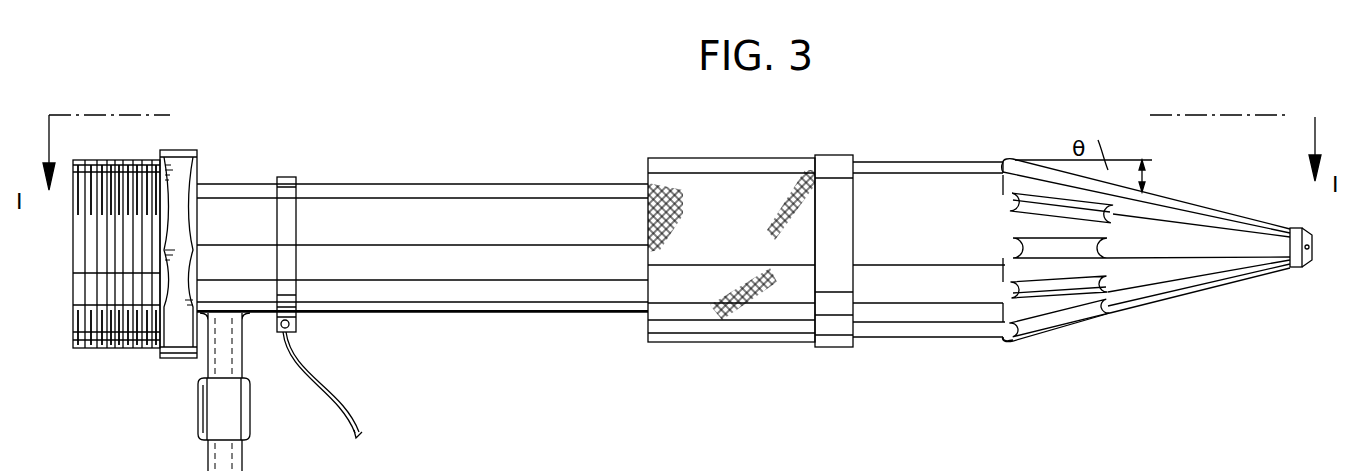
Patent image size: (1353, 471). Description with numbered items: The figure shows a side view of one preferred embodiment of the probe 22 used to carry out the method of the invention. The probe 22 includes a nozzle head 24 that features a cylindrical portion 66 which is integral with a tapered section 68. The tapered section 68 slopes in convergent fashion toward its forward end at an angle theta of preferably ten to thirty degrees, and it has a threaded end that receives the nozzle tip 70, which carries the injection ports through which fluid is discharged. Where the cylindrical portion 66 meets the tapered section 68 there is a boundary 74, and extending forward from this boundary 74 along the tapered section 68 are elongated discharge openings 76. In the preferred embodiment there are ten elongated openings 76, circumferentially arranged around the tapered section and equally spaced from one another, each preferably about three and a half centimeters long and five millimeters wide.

The probe 22 is at (743, 343).
The nozzle head 24 is at (927, 338).
The cylindrical portion 66 is at (910, 287).
The tapered section 68 is at (1208, 288).
The nozzle tip 70 is at (1302, 268).
The boundary 74 is at (1002, 337).
The elongated discharge openings 76 is at (1115, 220).